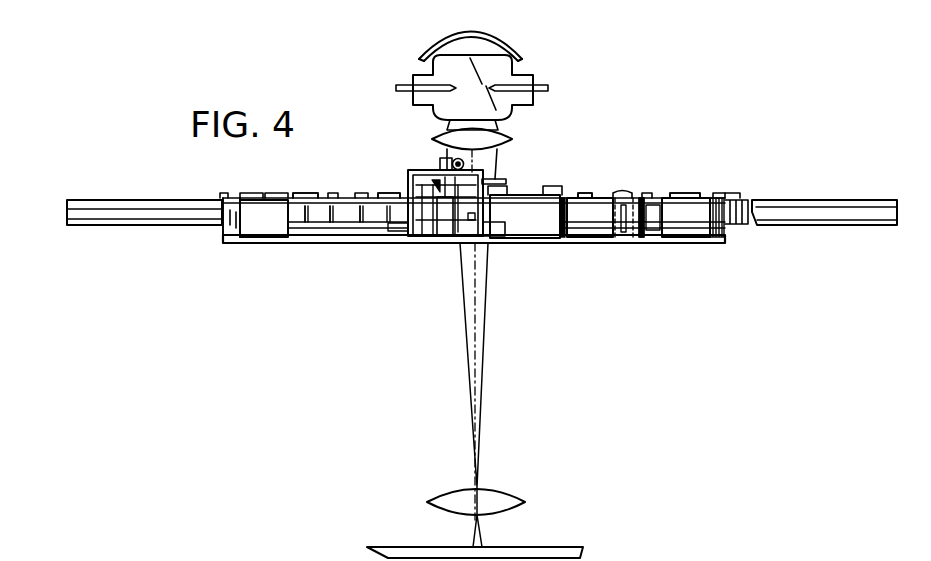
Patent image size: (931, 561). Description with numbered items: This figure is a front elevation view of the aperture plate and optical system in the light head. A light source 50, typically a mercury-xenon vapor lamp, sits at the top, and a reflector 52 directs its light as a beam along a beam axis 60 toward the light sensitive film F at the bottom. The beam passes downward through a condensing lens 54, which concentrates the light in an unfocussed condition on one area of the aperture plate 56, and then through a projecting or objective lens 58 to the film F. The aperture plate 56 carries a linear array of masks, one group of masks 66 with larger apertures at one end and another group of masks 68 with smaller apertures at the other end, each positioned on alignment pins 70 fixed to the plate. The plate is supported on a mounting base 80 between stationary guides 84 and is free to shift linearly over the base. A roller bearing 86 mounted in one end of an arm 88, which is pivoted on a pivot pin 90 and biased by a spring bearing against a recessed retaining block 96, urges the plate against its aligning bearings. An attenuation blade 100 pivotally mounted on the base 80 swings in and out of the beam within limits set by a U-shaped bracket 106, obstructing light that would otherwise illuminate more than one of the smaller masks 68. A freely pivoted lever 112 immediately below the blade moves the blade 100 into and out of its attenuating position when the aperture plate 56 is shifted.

The light source 50 is at (432, 78).
The reflector 52 is at (511, 48).
The condensing lens 54 is at (437, 132).
The aperture plate 56 is at (166, 200).
The projecting or objective lens 58 is at (465, 490).
The beam axis 60 is at (482, 358).
The masks 66 is at (705, 196).
The masks 68 is at (300, 195).
The alignment pins 70 is at (310, 206).
The mounting base 80 is at (272, 242).
The stationary guides 84 is at (267, 224).
The roller bearing 86 is at (470, 232).
The arm 88 is at (585, 210).
The pivot pin 90 is at (638, 240).
The recessed retaining block 96 is at (539, 224).
The attenuation blade 100 is at (500, 180).
The U-shaped bracket 106 is at (425, 235).
The lever 112 is at (462, 218).
The light sensitive film F is at (405, 547).